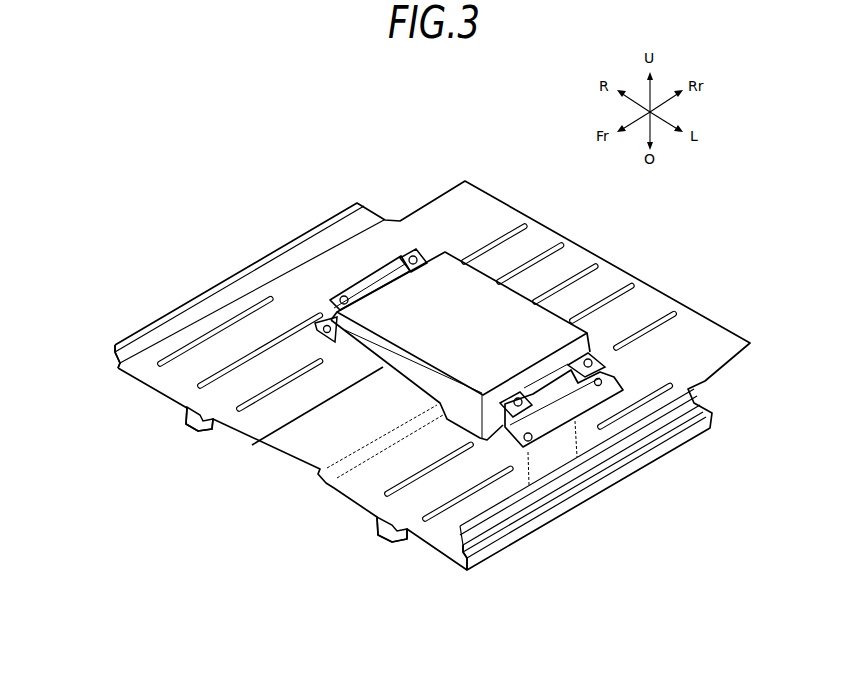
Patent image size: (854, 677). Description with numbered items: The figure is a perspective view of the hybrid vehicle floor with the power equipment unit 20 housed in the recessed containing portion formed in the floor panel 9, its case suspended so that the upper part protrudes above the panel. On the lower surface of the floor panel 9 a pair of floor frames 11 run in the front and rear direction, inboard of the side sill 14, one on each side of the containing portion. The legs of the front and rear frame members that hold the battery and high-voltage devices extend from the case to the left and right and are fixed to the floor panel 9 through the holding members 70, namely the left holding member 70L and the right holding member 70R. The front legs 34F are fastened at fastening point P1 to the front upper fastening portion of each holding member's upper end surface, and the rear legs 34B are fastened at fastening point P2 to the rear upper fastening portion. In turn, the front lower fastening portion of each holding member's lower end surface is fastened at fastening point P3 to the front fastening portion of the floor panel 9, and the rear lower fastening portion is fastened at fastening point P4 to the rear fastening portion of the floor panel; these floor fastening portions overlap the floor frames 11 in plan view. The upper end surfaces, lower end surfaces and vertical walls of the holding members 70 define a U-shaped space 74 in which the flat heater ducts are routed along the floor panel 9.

The floor panel 9 is at (270, 412).
The floor frame 11 is at (190, 428).
The side sill 14 is at (118, 343).
The power equipment unit 20 is at (491, 237).
The rear leg 34B is at (415, 250).
The front leg 34F is at (333, 318).
The holding member 70 is at (499, 341).
The right holding member 70R is at (343, 243).
The left holding member 70L is at (605, 452).
The U-shaped space 74 is at (243, 270).
The fastening point P1 is at (357, 304).
The fastening point P2 is at (418, 266).
The fastening point P3 is at (322, 333).
The fastening point P4 is at (604, 379).